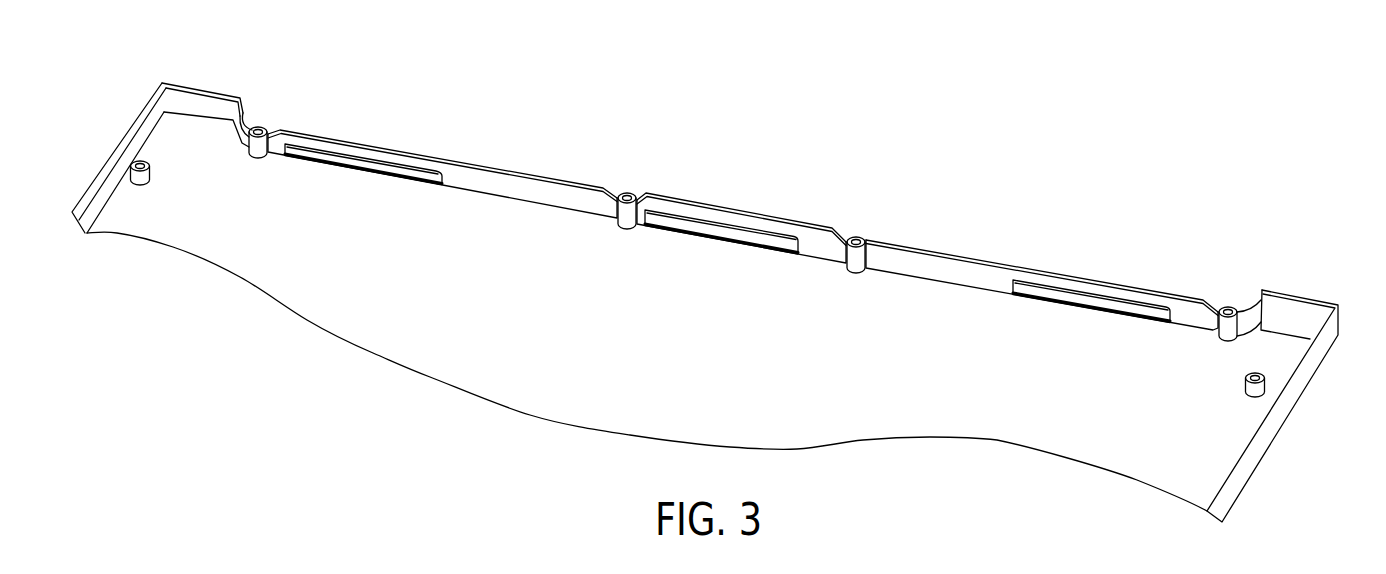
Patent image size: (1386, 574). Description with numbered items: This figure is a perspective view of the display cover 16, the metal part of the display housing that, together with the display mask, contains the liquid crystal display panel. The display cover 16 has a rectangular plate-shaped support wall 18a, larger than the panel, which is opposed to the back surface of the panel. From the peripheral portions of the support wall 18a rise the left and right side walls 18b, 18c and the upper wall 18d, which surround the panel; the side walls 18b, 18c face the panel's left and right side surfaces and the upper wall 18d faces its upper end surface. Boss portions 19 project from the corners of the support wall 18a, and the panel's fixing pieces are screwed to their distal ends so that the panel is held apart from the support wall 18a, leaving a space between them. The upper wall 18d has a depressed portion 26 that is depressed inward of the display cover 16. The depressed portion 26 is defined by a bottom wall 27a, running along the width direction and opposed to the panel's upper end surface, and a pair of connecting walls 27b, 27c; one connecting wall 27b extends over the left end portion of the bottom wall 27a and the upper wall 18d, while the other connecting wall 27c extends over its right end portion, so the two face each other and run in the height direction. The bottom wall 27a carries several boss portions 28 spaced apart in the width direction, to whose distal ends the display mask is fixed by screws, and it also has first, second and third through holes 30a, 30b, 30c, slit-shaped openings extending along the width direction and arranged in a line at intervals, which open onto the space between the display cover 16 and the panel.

The display cover 16 is at (708, 287).
The support wall 18a is at (532, 403).
The left side wall 18b is at (140, 134).
The right side wall 18c is at (1280, 416).
The upper wall 18d is at (193, 103).
The boss portion 19 is at (150, 172).
The depressed portion 26 is at (275, 123).
The bottom wall 27a is at (743, 248).
The connecting wall 27b is at (235, 124).
The connecting wall 27c is at (1253, 304).
The boss portion 28 is at (257, 160).
The first through hole 30a is at (363, 166).
The second through hole 30b is at (713, 229).
The third through hole 30c is at (1103, 304).